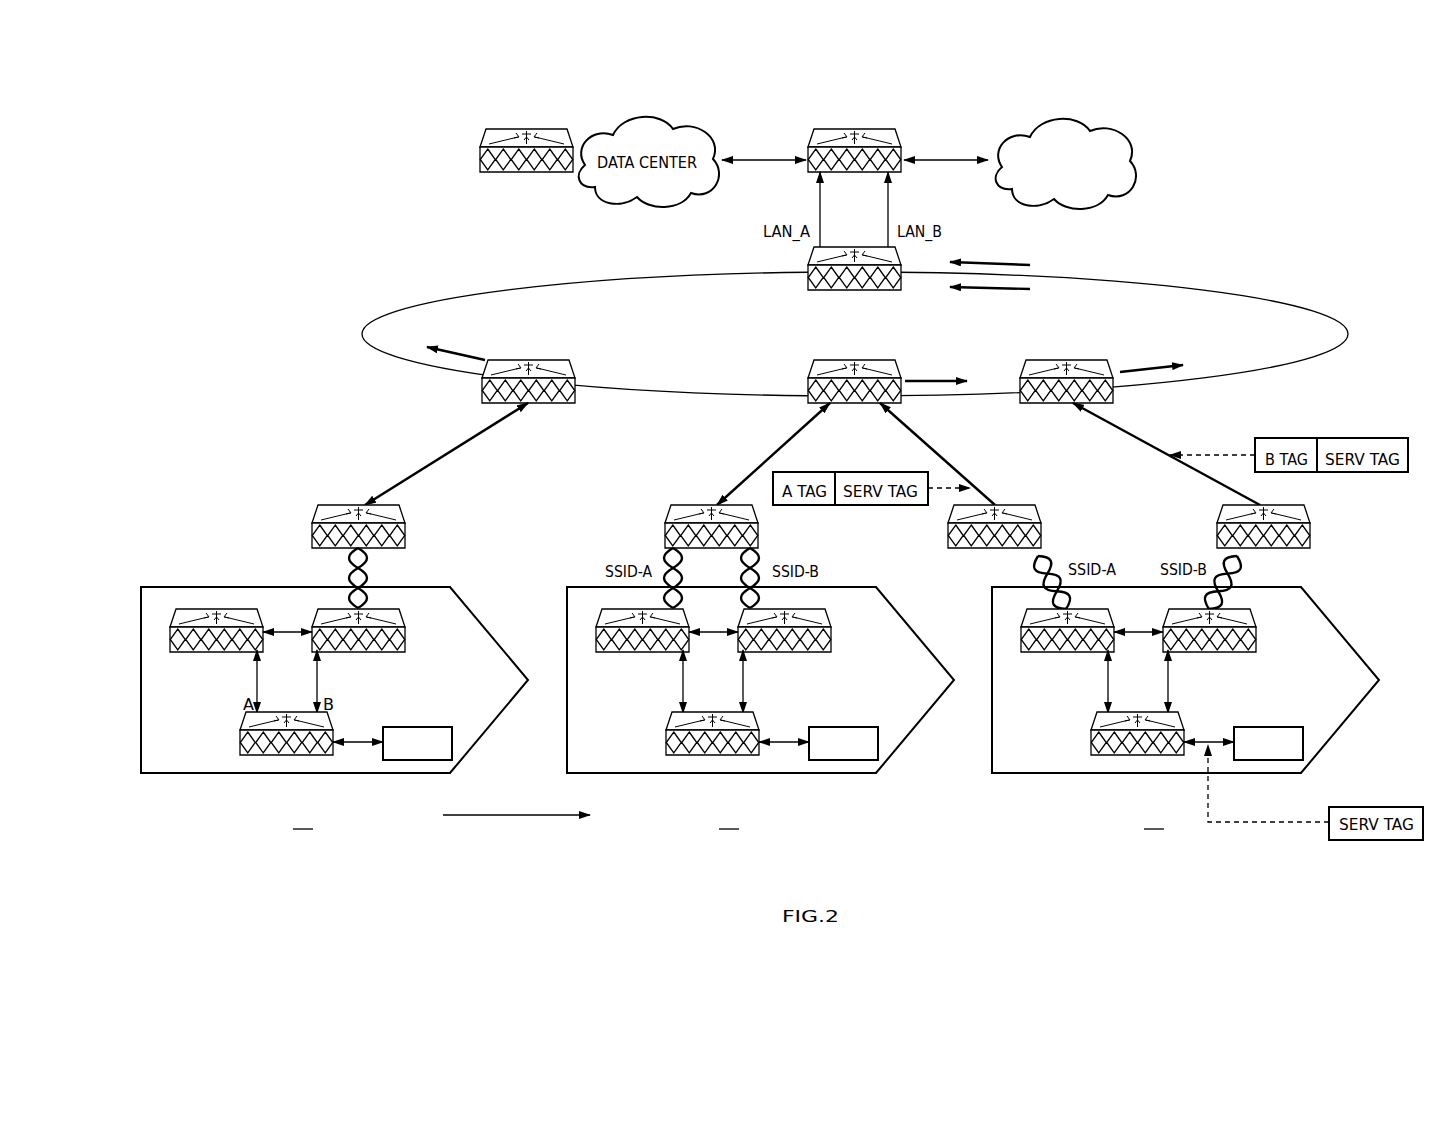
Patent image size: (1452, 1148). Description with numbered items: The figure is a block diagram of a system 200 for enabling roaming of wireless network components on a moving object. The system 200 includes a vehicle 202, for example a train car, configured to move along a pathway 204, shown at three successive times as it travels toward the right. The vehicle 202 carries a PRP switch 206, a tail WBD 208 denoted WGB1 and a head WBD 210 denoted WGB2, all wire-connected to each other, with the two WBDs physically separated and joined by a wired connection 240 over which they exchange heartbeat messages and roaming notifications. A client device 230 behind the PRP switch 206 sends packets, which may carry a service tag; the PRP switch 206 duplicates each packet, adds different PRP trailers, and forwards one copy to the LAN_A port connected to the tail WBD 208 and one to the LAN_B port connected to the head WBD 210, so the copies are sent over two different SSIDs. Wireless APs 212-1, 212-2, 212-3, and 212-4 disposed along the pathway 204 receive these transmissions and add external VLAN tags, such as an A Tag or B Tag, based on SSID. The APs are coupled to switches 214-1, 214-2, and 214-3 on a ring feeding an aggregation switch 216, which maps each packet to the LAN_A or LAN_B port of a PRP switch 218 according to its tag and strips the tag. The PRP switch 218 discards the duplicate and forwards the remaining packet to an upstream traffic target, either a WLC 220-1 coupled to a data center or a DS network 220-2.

The system 200 is at (357, 129).
The vehicle 202 is at (358, 773).
The pathway 204 is at (540, 815).
The PRP switch 206 is at (240, 722).
The tail WBD 208 is at (185, 650).
The head WBD 210 is at (388, 650).
The wireless AP 212-1 is at (310, 534).
The wireless AP 212-2 is at (663, 535).
The wireless AP 212-3 is at (977, 548).
The wireless AP 212-4 is at (1282, 548).
The switch 214-1 is at (540, 403).
The switch 214-2 is at (833, 403).
The switch 214-3 is at (1027, 403).
The aggregation switch 216 is at (876, 290).
The PRP switch 218 is at (895, 172).
The WLC 220-1 is at (480, 160).
The DS network 220-2 is at (1063, 204).
The client device 230 is at (408, 725).
The wired connection 240 is at (289, 635).